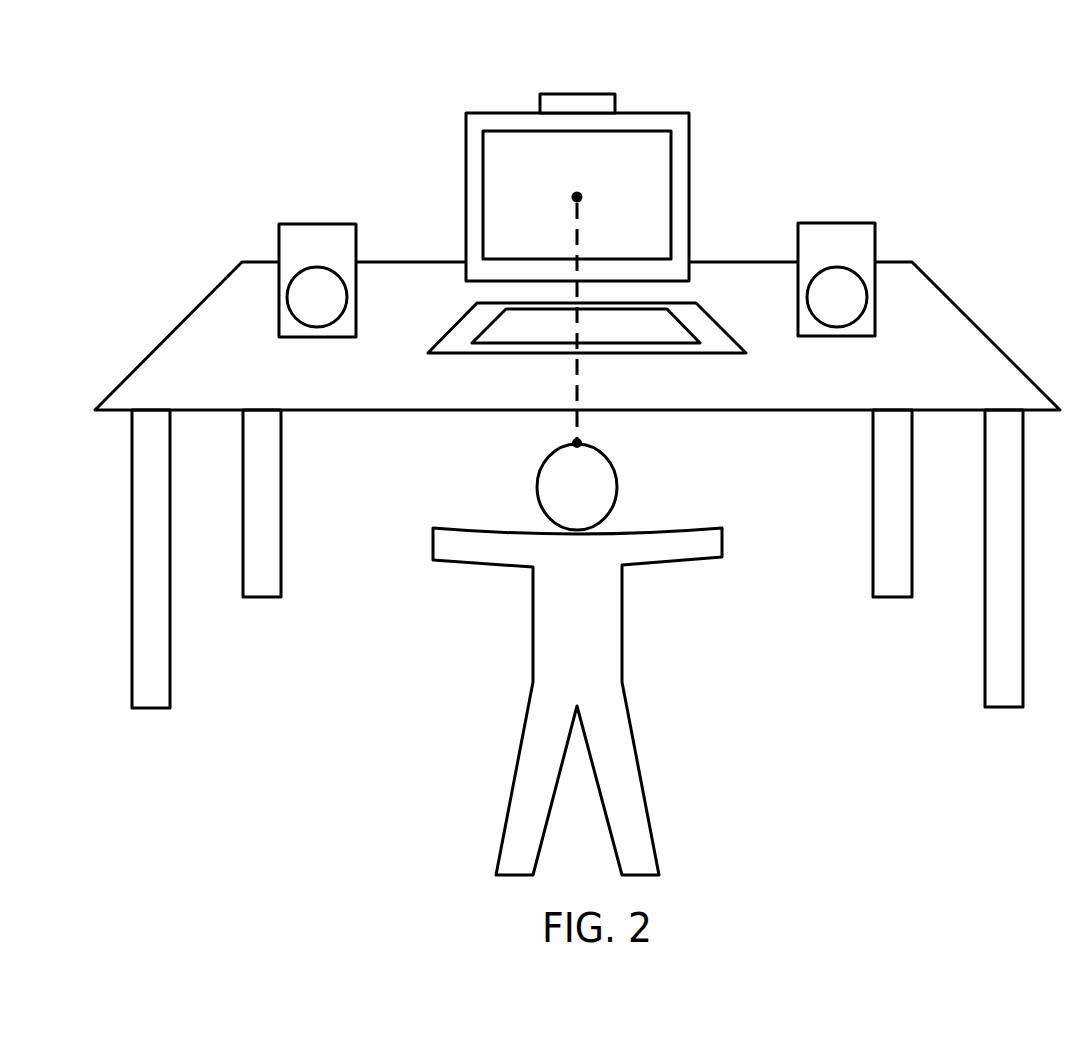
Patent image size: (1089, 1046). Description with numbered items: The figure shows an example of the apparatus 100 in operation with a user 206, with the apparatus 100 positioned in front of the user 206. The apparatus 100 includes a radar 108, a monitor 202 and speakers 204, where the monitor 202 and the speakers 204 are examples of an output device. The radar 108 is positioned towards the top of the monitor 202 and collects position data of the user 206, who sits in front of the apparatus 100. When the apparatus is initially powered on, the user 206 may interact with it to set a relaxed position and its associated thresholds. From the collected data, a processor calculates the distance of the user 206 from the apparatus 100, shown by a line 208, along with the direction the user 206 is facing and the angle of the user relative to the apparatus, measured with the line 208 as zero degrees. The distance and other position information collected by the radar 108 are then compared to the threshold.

The apparatus 100 is at (689, 132).
The radar 108 is at (556, 94).
The monitor 202 is at (577, 183).
The speakers 204 is at (875, 233).
The user 206 is at (657, 528).
The line 208 is at (577, 398).